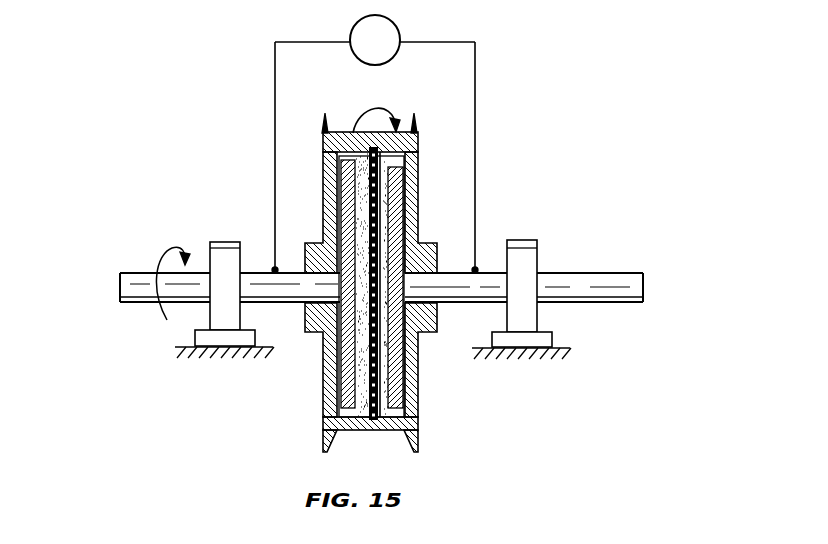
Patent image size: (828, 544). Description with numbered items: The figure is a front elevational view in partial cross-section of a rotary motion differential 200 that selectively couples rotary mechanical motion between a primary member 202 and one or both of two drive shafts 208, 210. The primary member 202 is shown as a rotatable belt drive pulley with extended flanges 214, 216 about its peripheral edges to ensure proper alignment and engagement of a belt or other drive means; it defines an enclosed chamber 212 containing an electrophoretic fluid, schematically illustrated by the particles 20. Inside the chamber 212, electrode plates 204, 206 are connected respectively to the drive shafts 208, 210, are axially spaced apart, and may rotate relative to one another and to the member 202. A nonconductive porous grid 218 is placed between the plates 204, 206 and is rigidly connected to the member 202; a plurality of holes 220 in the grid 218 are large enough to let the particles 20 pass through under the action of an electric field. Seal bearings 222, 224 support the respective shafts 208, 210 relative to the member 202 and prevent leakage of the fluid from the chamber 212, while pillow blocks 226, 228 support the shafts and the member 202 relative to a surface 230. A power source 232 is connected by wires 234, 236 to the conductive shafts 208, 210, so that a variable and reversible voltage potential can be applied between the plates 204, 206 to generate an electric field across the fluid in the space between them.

The rotary motion differential 200 is at (188, 123).
The primary member 202 is at (405, 190).
The electrode plate 204 is at (340, 367).
The electrode plate 206 is at (386, 370).
The drive shaft 208 is at (148, 283).
The drive shaft 210 is at (620, 283).
The enclosed chamber 212 is at (359, 168).
The extended flange 214 is at (325, 113).
The extended flange 216 is at (414, 113).
The nonconductive porous grid 218 is at (364, 420).
The holes 220 is at (360, 190).
The seal bearing 222 is at (307, 315).
The seal bearing 224 is at (437, 313).
The pillow block 226 is at (228, 241).
The pillow block 228 is at (520, 248).
The surface 230 is at (225, 360).
The power source 232 is at (396, 50).
The wire 234 is at (287, 42).
The wire 236 is at (457, 42).
The particles 20 is at (392, 398).